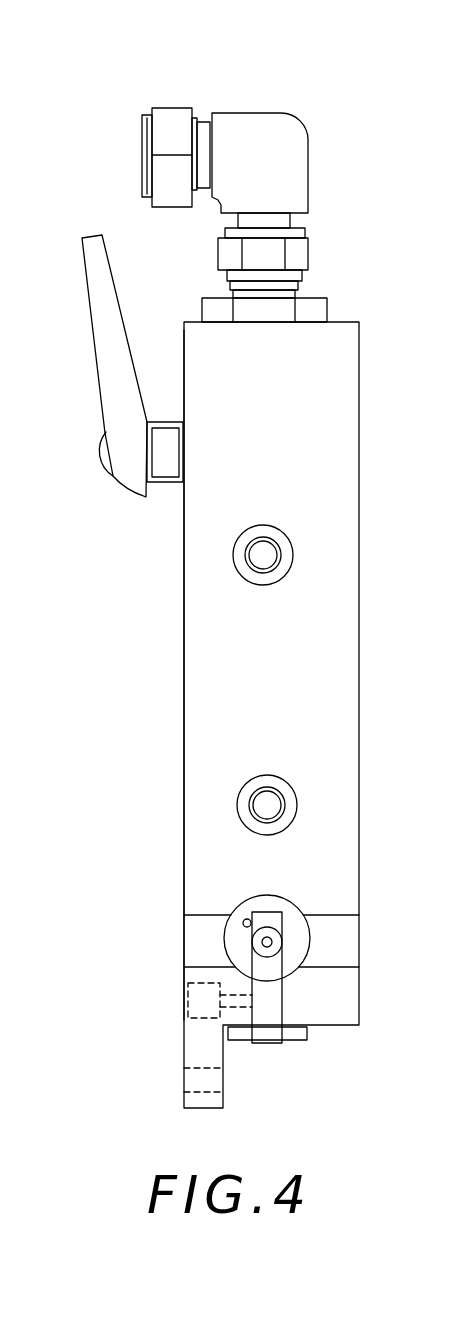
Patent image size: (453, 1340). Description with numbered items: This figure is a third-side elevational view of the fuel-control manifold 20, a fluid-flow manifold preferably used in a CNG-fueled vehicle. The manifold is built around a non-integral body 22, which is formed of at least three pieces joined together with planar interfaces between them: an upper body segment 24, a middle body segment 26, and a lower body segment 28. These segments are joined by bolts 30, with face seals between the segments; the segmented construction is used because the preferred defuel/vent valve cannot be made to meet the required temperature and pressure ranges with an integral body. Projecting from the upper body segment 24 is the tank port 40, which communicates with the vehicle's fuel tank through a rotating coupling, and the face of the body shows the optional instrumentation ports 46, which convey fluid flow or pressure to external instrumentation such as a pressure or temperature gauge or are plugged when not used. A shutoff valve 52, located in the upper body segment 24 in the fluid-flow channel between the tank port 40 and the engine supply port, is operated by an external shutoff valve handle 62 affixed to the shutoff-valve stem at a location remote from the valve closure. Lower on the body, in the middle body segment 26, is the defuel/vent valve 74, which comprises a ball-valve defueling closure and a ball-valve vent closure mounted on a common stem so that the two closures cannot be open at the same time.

The fuel-control manifold 20 is at (135, 82).
The non-integral body 22 is at (366, 456).
The upper body segment 24 is at (184, 598).
The middle body segment 26 is at (184, 938).
The lower body segment 28 is at (188, 1006).
The bolts 30 is at (295, 1040).
The tank port 40 is at (302, 294).
The instrumentation ports 46 is at (252, 568).
The shutoff valve 52 is at (176, 492).
The shutoff valve handle 62 is at (93, 331).
The defuel/vent valve 74 is at (310, 977).